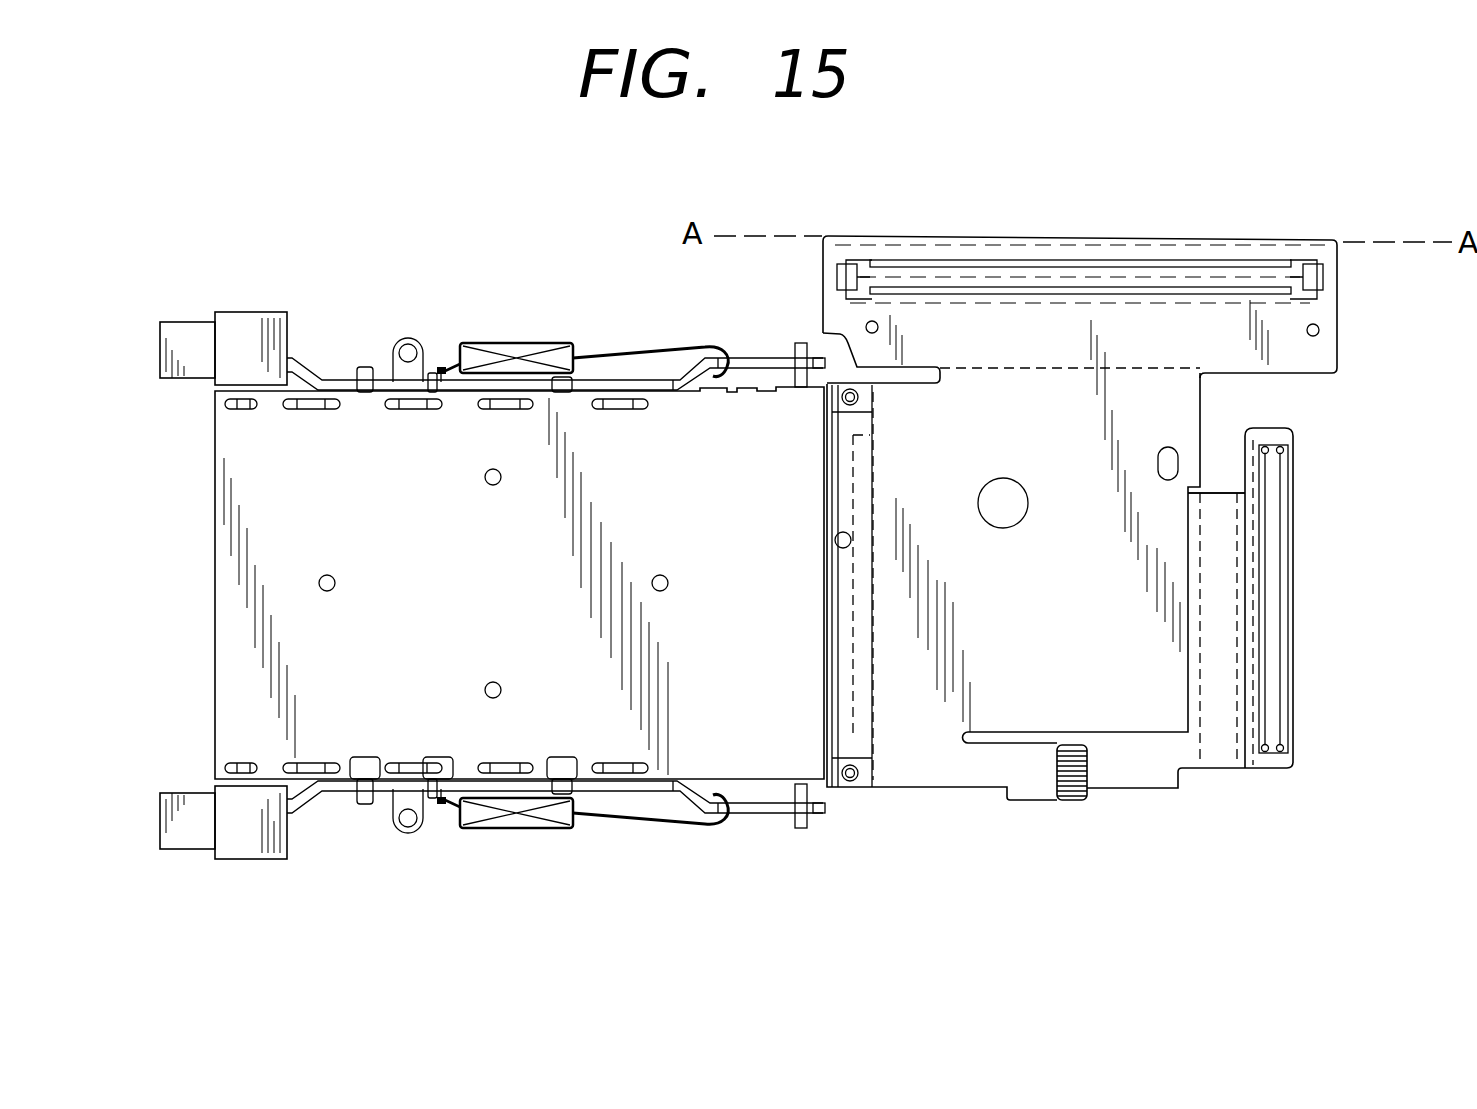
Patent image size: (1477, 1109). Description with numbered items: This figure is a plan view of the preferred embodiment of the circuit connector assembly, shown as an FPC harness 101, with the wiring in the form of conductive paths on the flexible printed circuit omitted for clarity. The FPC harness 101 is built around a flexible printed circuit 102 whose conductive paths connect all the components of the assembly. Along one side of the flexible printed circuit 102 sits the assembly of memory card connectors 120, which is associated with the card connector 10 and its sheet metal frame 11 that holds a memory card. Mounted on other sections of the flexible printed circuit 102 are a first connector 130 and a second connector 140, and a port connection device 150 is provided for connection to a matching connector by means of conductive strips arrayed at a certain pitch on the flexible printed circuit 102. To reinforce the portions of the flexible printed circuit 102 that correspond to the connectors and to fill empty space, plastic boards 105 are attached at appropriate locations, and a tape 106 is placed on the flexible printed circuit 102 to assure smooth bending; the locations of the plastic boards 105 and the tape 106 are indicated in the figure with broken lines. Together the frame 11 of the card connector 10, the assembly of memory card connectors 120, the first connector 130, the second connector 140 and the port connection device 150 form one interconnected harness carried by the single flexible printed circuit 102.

The card connector 10 is at (362, 290).
The frame 11 is at (540, 718).
The FPC harness 101 is at (1330, 570).
The flexible printed circuit (FPC) 102 is at (1082, 633).
The plastic boards 105 is at (1278, 436).
The tape 106 is at (1220, 752).
The assembly of memory card connectors 120 is at (875, 770).
The first connector 130 is at (1042, 240).
The second connector 140 is at (1293, 718).
The port connection device 150 is at (1043, 805).